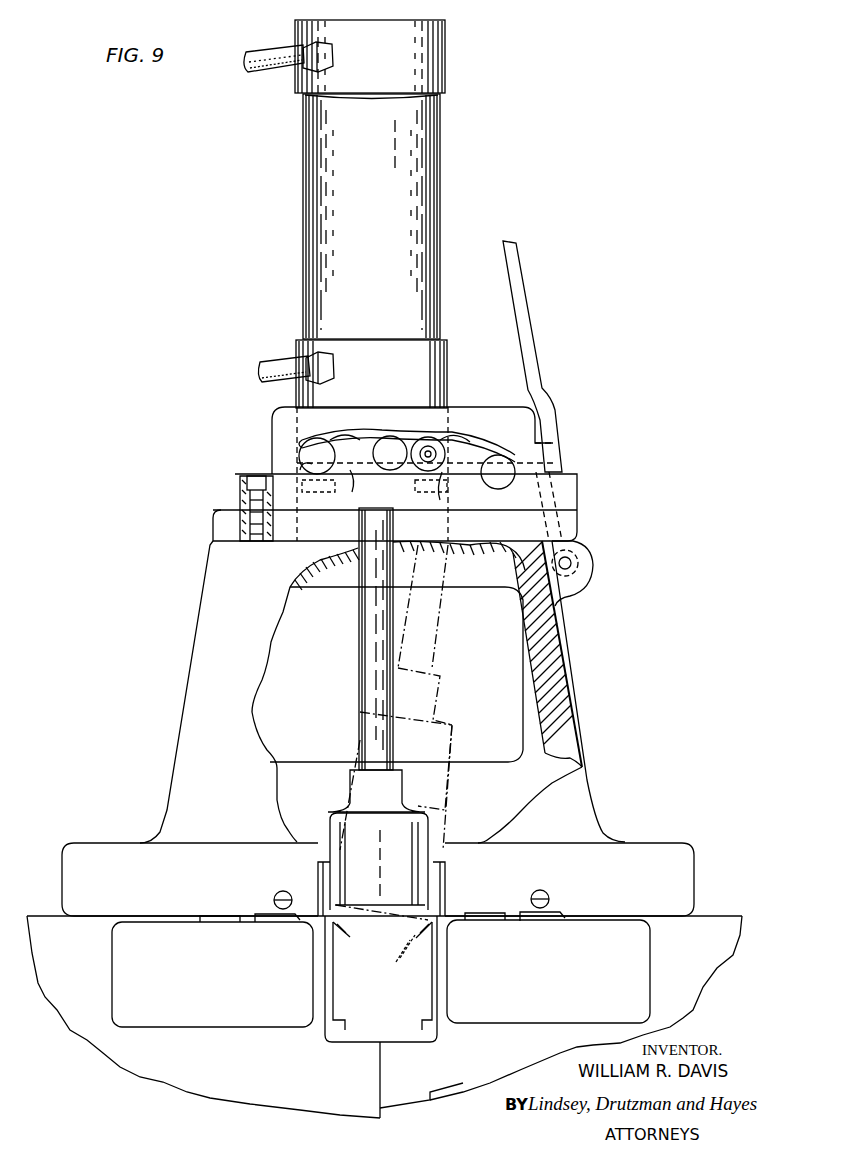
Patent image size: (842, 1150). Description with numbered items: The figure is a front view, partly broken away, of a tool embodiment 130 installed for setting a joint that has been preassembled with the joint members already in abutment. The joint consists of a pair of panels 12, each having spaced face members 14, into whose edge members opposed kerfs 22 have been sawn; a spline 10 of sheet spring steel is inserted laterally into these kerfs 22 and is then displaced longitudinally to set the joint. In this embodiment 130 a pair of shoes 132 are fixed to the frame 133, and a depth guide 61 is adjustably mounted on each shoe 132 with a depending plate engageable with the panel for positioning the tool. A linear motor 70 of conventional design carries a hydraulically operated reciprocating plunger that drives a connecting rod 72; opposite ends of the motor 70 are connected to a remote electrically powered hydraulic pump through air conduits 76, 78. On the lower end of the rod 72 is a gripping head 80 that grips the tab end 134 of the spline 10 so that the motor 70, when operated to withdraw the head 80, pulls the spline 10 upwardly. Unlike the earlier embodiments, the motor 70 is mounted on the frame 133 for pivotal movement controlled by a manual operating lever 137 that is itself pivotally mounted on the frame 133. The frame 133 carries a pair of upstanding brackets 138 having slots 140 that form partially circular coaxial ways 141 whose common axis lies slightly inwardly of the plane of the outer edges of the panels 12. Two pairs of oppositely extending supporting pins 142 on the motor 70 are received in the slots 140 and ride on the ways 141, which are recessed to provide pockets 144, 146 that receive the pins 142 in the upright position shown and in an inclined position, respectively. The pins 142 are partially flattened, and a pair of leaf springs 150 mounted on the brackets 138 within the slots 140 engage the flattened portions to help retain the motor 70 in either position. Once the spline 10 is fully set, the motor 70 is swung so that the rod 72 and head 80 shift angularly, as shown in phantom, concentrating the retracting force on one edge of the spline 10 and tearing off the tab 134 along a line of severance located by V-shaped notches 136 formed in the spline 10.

The spline 10 is at (388, 1007).
The panel 12 is at (208, 1059).
The face member 14 is at (44, 982).
The kerf 22 is at (334, 1030).
The depth guide 61 is at (214, 977).
The linear motor 70 is at (385, 187).
The connecting rod 72 is at (370, 622).
The air conduit 76 is at (288, 362).
The air conduit 78 is at (284, 52).
The gripping head 80 is at (446, 720).
The tool embodiment 130 is at (213, 506).
The shoe 132 is at (106, 852).
The frame 133 is at (232, 688).
The tab end of the spline 134 is at (452, 794).
The V-shaped notch 136 is at (432, 1028).
The manual operating lever 137 is at (518, 282).
The upstanding bracket 138 is at (282, 428).
The slot 140 is at (478, 500).
The way 141 is at (352, 482).
The supporting pin 142 is at (328, 465).
The pocket 144 is at (306, 472).
The pocket 146 is at (390, 471).
The leaf spring 150 is at (404, 438).